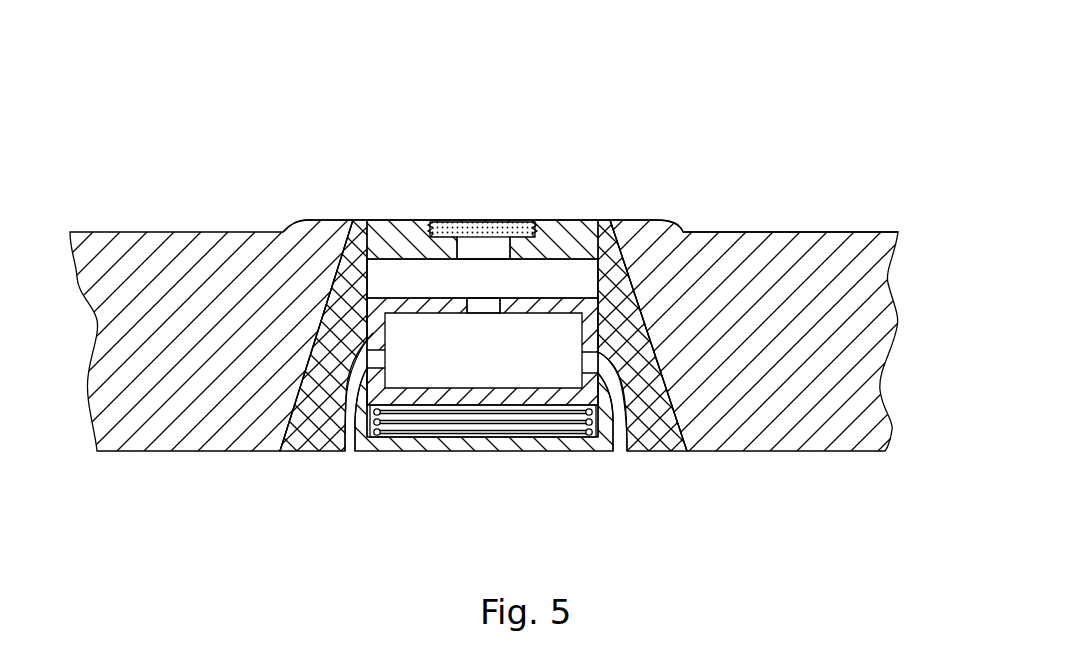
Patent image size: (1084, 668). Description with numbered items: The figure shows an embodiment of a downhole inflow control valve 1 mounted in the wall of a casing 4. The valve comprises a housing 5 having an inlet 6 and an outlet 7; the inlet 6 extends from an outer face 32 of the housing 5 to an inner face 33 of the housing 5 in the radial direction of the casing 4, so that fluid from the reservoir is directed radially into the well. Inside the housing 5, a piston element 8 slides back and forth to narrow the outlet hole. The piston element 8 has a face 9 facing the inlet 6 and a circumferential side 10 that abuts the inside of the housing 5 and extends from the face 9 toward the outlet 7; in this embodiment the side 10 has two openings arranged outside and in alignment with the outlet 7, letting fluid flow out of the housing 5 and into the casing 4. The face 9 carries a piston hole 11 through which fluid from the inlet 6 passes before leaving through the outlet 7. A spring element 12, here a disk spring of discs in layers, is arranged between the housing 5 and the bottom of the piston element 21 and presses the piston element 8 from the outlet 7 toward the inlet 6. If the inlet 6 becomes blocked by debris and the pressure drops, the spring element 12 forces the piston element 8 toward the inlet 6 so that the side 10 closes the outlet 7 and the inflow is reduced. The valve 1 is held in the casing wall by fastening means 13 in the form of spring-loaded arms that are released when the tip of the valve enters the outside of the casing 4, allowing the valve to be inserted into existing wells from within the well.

The inflow control valve 1 is at (300, 113).
The casing 4 is at (823, 280).
The outer face 32 is at (752, 232).
The fastening means 13 is at (328, 230).
The side 10 is at (280, 447).
The housing 5 is at (620, 303).
The piston element 8 is at (587, 315).
The inner face 33 is at (417, 257).
The inlet 6 is at (480, 253).
The piston hole 11 is at (485, 308).
The face 9 is at (415, 307).
The outlet 7 is at (347, 444).
The spring element 12 is at (507, 432).
The bottom of the piston element 21 is at (444, 398).